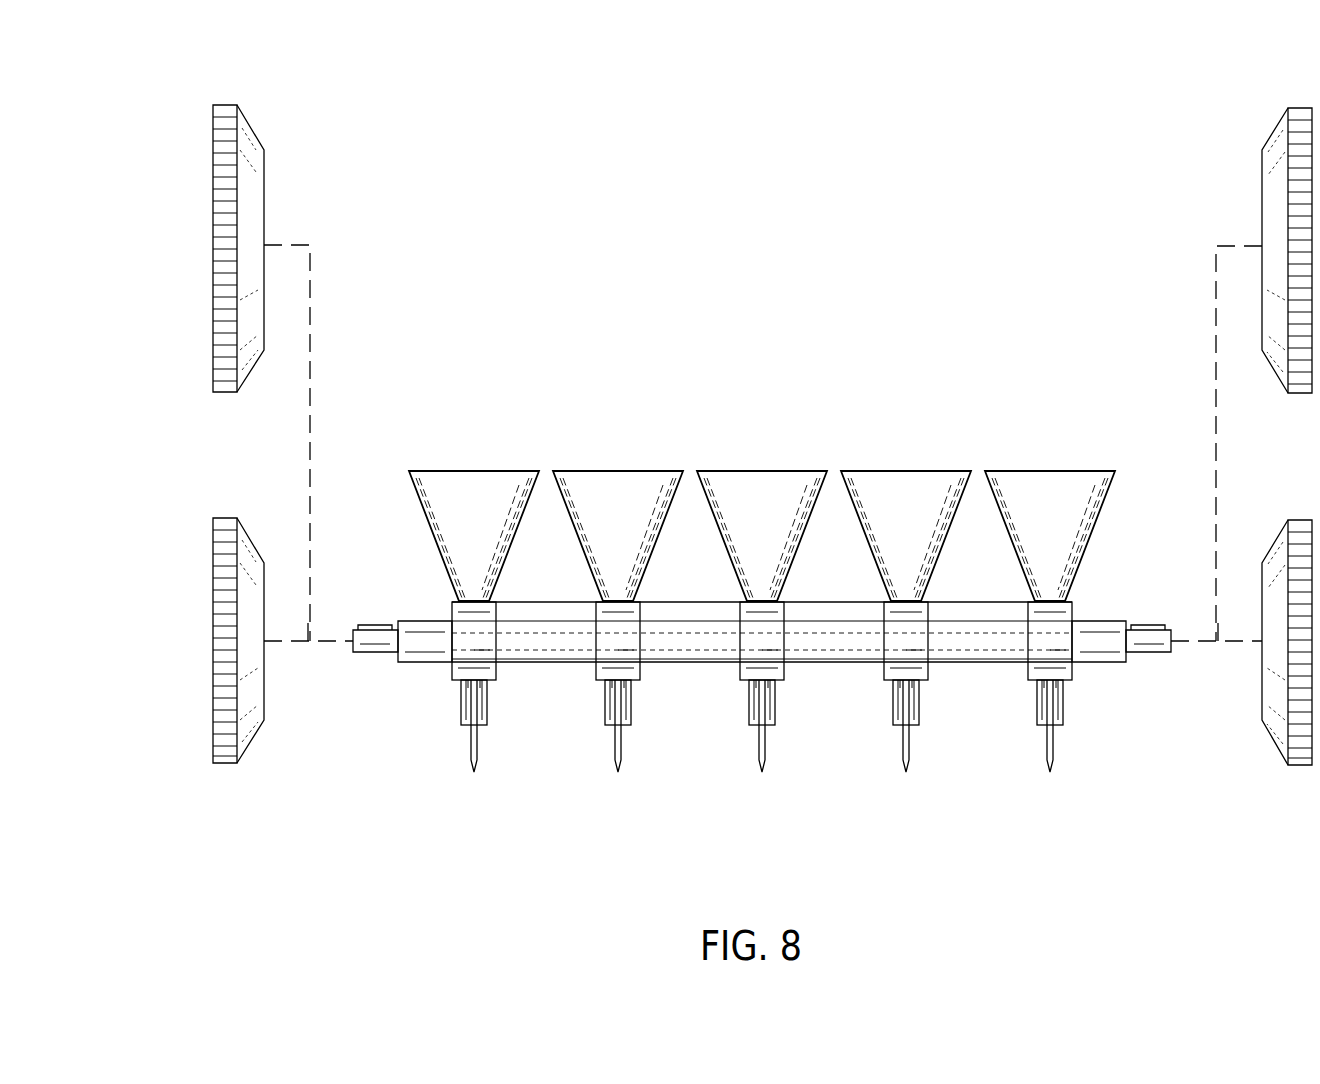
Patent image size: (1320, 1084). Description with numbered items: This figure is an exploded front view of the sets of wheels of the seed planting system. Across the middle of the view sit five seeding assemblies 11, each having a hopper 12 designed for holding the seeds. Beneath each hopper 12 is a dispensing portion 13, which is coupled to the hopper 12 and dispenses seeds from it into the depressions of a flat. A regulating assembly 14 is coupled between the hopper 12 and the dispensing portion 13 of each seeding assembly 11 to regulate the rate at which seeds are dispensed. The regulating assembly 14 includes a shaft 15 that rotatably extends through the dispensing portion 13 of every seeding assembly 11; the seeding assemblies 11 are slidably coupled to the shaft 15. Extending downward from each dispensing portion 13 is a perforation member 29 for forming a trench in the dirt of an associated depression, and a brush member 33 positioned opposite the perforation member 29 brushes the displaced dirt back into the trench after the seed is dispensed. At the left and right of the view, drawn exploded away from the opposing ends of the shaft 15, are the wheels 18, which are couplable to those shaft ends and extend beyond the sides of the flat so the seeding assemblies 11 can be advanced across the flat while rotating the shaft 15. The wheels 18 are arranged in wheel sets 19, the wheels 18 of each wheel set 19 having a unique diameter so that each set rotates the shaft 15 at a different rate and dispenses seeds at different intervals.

The seeding assembly 11 is at (458, 432).
The hopper 12 is at (507, 489).
The dispensing portion 13 is at (458, 667).
The regulating assembly 14 is at (190, 637).
The shaft 15 is at (513, 647).
The wheel 18 is at (248, 143).
The wheel set 19 is at (1182, 195).
The perforation member 29 is at (473, 773).
The brush member 33 is at (463, 722).